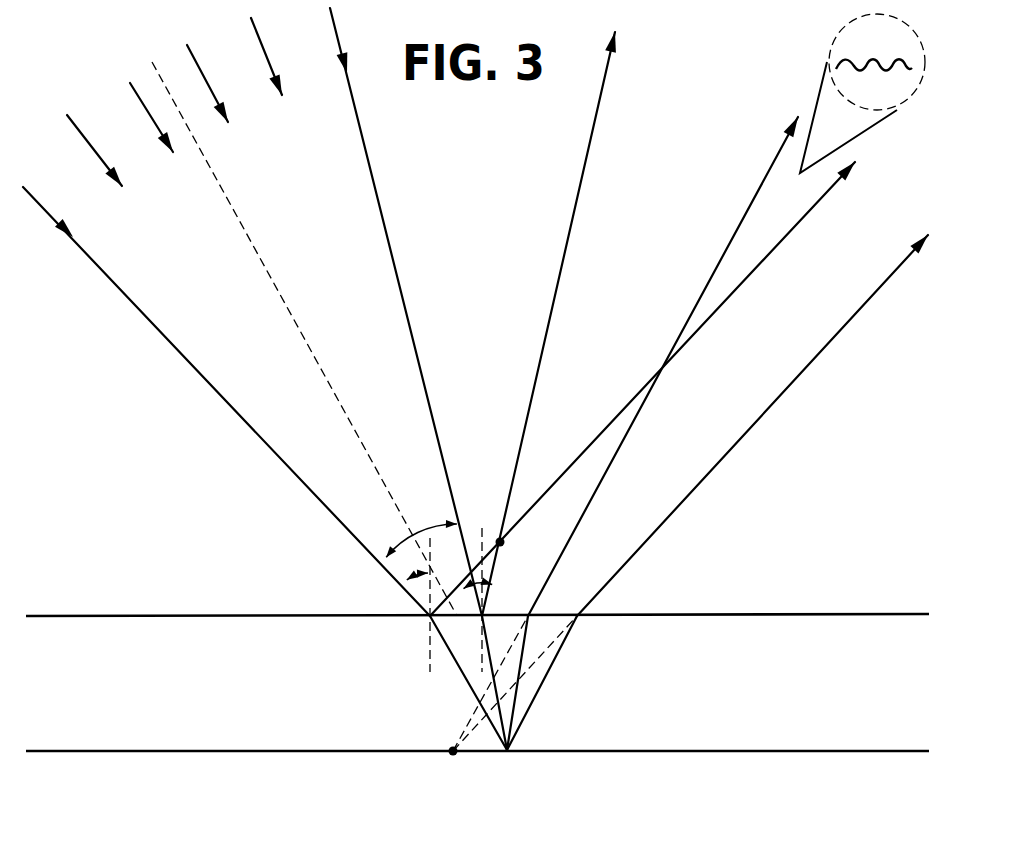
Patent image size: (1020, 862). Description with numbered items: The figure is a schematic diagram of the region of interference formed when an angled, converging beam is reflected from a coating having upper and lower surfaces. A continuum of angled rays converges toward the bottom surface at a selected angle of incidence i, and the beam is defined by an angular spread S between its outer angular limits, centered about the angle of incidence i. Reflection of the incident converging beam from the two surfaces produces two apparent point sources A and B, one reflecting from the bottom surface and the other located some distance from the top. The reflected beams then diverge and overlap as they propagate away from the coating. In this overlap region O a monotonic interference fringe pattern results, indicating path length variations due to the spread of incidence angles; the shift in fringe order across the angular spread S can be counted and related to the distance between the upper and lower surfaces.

The angular spread S is at (421, 523).
The angle of incidence i is at (414, 566).
The angle of reflection r is at (488, 592).
The apparent point source A is at (507, 546).
The apparent point source B is at (504, 686).
The overlap region O is at (832, 48).